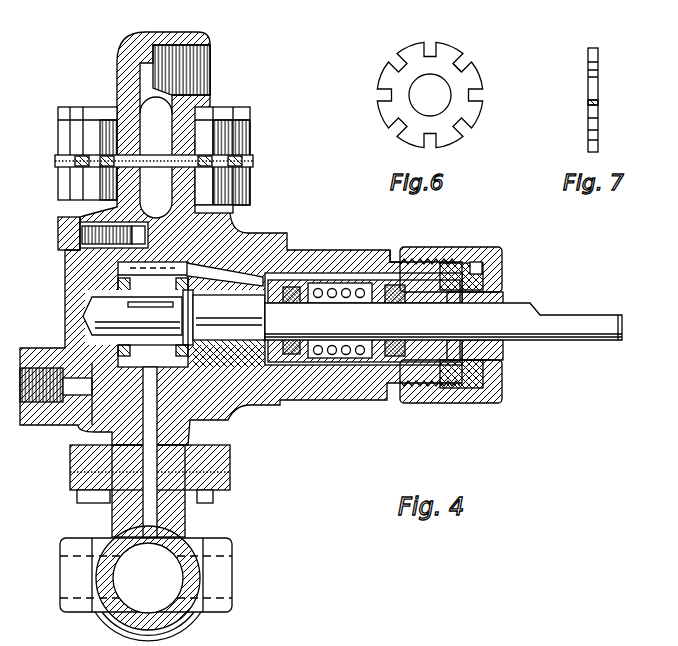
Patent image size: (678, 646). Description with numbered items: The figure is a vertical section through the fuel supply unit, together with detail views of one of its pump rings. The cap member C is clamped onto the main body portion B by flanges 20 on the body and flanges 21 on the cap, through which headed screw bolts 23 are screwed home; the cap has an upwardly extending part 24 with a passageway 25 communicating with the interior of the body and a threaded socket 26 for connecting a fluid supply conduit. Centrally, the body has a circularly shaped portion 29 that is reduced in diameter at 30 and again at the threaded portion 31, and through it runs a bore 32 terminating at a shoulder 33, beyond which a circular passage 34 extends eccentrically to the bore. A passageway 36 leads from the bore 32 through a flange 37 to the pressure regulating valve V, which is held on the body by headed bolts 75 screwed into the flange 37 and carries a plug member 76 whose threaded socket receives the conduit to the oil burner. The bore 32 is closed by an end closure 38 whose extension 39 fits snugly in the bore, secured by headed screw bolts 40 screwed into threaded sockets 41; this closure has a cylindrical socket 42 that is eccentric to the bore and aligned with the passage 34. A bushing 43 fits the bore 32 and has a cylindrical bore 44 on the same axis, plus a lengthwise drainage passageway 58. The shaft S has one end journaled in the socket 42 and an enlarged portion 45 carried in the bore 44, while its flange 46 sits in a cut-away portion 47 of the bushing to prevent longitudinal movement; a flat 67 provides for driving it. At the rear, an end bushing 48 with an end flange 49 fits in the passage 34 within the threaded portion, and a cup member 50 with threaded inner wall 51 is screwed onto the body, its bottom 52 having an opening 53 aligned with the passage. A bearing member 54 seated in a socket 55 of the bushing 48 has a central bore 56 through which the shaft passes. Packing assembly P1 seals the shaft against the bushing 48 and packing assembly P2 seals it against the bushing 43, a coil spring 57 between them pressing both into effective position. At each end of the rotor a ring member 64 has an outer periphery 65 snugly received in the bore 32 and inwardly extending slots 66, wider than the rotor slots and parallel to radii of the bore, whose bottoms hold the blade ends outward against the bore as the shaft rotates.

In FIG. 4, the flanges 20 is at (248, 186).
In FIG. 4, the flanges 21 is at (250, 137).
In FIG. 4, the headed screw bolts 23 is at (68, 108).
In FIG. 4, the upwardly extending part 24 is at (135, 64).
In FIG. 4, the passageway 25 is at (132, 92).
In FIG. 4, the threaded socket 26 is at (200, 58).
In FIG. 4, the circularly shaped portion 29 is at (262, 255).
In FIG. 4, the reduced diameter portion 30 is at (365, 252).
In FIG. 4, the reduced threaded portion 31 is at (395, 262).
In FIG. 4, the bore 32 is at (215, 423).
In FIG. 4, the shoulder 33 is at (287, 248).
In FIG. 4, the circular passage 34 is at (340, 398).
In FIG. 4, the passageway 36 is at (140, 433).
In FIG. 4, the flange 37 is at (70, 457).
In FIG. 4, the end closure 38 is at (65, 270).
In FIG. 4, the extension 39 is at (148, 358).
In FIG. 4, the headed screw bolts 40 is at (58, 222).
In FIG. 4, the threaded sockets 41 is at (58, 250).
In FIG. 4, the cylindrical socket 42 is at (88, 300).
In FIG. 4, the bushing 43 is at (230, 345).
In FIG. 4, the cylindrical bore 44 is at (245, 350).
In FIG. 4, the enlarged portion 45 is at (270, 305).
In FIG. 4, the flange 46 is at (193, 318).
In FIG. 4, the cut-away portion 47 is at (195, 294).
In FIG. 4, the end bushing 48 is at (452, 398).
In FIG. 4, the end flange 49 is at (479, 400).
In FIG. 4, the cup member 50 is at (490, 248).
In FIG. 4, the threaded inner wall 51 is at (458, 250).
In FIG. 4, the bottom 52 is at (488, 272).
In FIG. 4, the opening 53 is at (488, 285).
In FIG. 4, the bearing member 54 is at (502, 360).
In FIG. 4, the socket 55 is at (503, 300).
In FIG. 4, the central bore 56 is at (492, 338).
In FIG. 4, the coil spring 57 is at (347, 288).
In FIG. 4, the passageway 58 is at (247, 272).
In FIG. 4, the ring member 64 is at (85, 338).
In FIG. 6, the ring member 64 is at (408, 46).
In FIG. 7, the ring member 64 is at (587, 77).
In FIG. 6, the outer periphery 65 is at (390, 80).
In FIG. 6, the slots 66 is at (463, 60).
In FIG. 4, the flat 67 is at (585, 316).
In FIG. 4, the headed bolts 75 is at (215, 500).
In FIG. 4, the plug member 76 is at (150, 538).
In FIG. 4, the main body portion B is at (244, 233).
In FIG. 4, the cap member C is at (228, 95).
In FIG. 4, the shaft S is at (550, 323).
In FIG. 4, the pressure regulating valve V is at (237, 577).
In FIG. 4, the packing assembly P1 is at (413, 397).
In FIG. 4, the packing assembly P2 is at (292, 295).